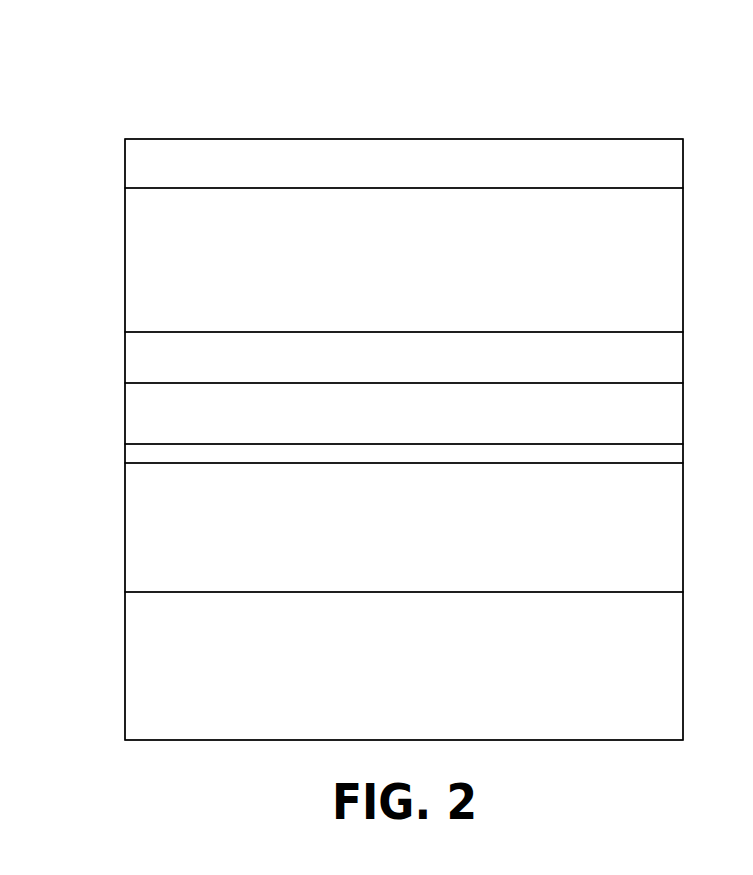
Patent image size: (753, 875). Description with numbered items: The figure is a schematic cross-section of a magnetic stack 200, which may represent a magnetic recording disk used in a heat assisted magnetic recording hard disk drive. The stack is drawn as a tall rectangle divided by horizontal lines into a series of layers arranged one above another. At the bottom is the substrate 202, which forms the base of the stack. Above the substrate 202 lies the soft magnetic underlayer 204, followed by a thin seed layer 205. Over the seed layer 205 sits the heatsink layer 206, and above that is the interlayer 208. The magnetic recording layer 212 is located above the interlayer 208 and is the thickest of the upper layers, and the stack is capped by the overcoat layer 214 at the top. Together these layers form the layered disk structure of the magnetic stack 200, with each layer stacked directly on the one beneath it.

The magnetic stack 200 is at (190, 80).
The substrate 202 is at (125, 671).
The soft magnetic underlayer 204 is at (125, 520).
The seed layer 205 is at (125, 454).
The heatsink layer 206 is at (125, 420).
The interlayer 208 is at (125, 358).
The magnetic recording layer 212 is at (125, 261).
The overcoat layer 214 is at (125, 164).